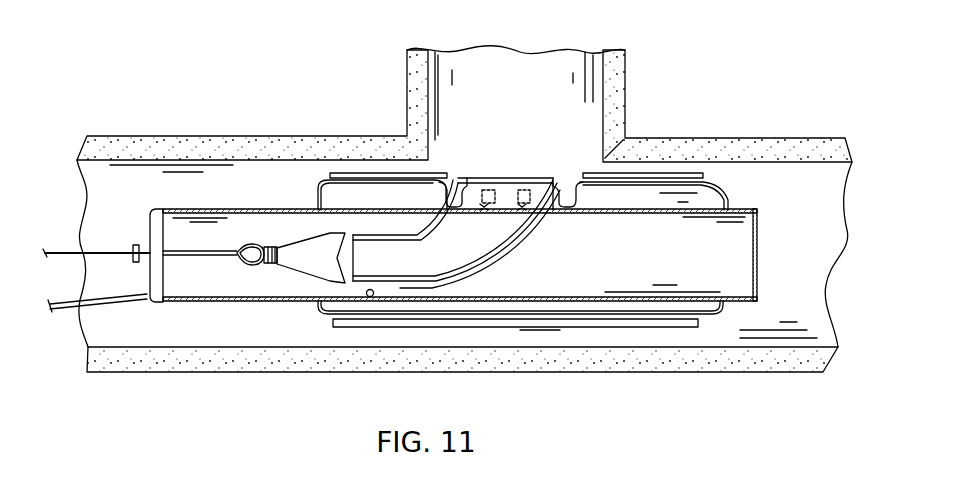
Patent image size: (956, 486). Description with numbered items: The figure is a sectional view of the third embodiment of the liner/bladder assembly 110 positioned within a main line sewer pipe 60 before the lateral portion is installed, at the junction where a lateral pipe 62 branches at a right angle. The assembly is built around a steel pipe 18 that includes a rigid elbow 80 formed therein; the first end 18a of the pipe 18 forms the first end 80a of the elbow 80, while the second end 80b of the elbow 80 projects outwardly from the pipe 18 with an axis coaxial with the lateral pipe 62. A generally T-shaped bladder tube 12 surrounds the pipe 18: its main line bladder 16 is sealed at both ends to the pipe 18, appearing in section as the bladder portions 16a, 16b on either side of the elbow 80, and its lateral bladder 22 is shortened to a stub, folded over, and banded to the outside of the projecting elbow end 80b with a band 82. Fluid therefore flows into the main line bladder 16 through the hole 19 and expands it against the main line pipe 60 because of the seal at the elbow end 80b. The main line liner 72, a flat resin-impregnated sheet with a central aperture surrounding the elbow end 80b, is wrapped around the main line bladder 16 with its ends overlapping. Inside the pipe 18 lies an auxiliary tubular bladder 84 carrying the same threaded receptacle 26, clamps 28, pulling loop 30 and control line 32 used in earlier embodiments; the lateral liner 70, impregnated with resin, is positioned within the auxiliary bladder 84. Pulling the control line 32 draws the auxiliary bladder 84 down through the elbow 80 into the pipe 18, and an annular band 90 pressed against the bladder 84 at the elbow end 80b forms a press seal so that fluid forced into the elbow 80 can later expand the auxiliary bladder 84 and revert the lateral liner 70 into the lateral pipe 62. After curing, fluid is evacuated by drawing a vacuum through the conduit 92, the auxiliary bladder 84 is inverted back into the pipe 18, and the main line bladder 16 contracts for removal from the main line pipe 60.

The third embodiment of liner/bladder assembly 110 is at (145, 60).
The T-shaped bladder tube 12 is at (712, 326).
The main line bladder 16 is at (569, 300).
The distal balloon lobe 16a is at (703, 187).
The proximal balloon lobe 16b is at (350, 180).
The steel pipe 18 is at (181, 209).
The open forward end of pipe 18a is at (318, 305).
The hole 19 is at (369, 297).
The lateral bladder 22 is at (535, 243).
The threaded receptacle 26 is at (250, 267).
The clamps 28 is at (273, 265).
The pulling loop 30 is at (245, 234).
The control line 32 is at (197, 256).
The main line sewer pipe 60 is at (803, 150).
The lateral pipe 62 is at (612, 83).
The lateral liner 70 is at (498, 192).
The main line liner 72 is at (420, 176).
The rigid elbow 80 is at (508, 290).
The first end of elbow 80a is at (377, 208).
The second end of elbow 80b is at (527, 237).
The band 82 is at (450, 173).
The auxiliary tubular bladder 84 is at (152, 228).
The annular band 90 is at (533, 237).
The conduit 92 is at (75, 310).